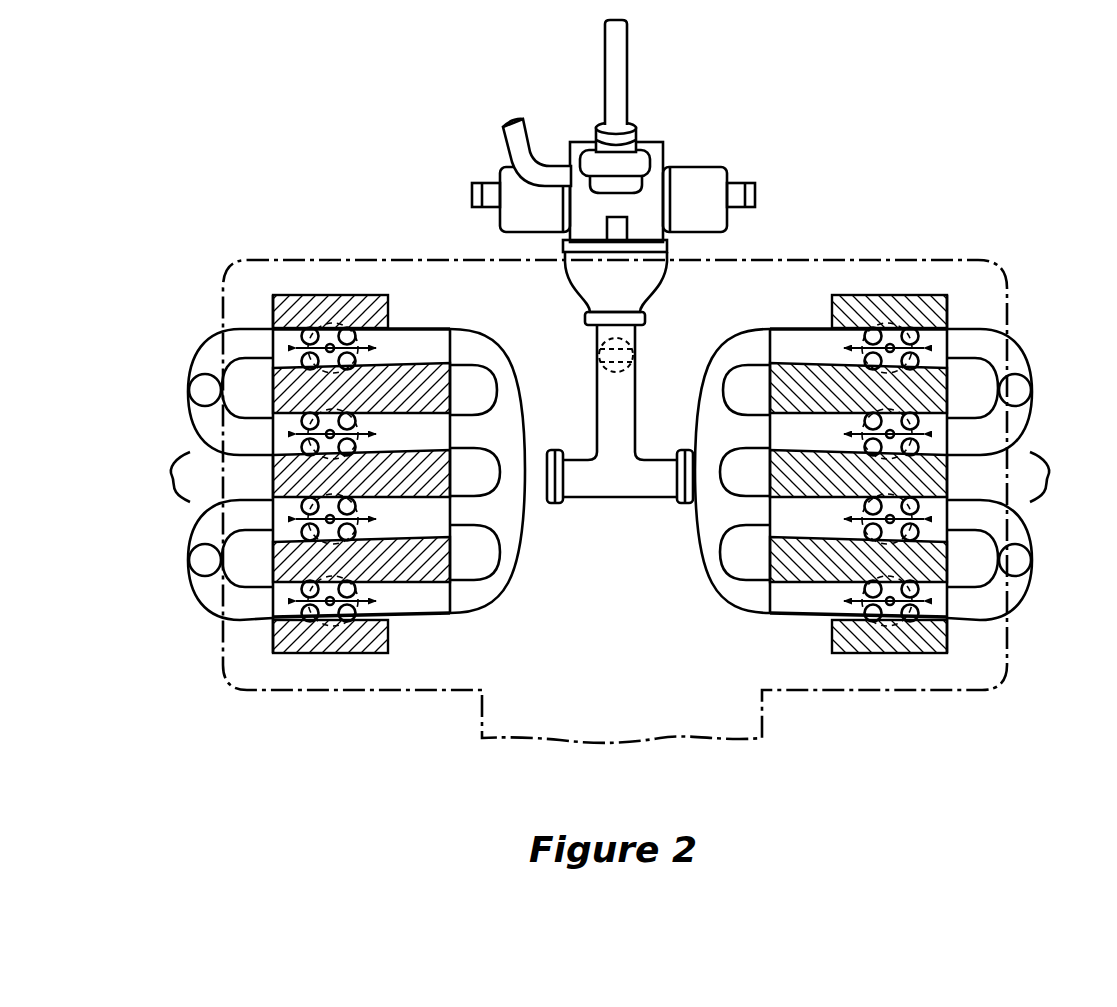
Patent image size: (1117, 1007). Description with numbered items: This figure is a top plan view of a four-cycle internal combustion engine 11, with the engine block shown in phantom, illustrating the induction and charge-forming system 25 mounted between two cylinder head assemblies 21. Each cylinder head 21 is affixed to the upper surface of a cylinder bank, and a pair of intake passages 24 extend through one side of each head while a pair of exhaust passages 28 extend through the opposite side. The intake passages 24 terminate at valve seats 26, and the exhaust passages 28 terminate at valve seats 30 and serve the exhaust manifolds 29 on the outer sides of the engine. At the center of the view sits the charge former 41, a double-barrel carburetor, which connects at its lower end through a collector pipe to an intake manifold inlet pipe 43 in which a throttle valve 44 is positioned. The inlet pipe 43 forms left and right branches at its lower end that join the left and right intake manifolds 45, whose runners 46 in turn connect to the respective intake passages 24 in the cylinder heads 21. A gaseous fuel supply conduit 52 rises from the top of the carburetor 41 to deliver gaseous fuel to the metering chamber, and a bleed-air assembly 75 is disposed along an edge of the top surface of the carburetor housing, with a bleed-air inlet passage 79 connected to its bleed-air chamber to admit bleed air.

The internal combustion engine 11 is at (948, 258).
The cylinder head assembly 21 is at (338, 295).
The intake passage 24 is at (413, 327).
The induction and charge-forming system 25 is at (582, 132).
The valve seat 26 is at (362, 328).
The exhaust passage 28 is at (300, 328).
The exhaust manifold 29 is at (205, 591).
The valve seat 30 is at (310, 328).
The charge former 41 is at (678, 135).
The intake manifold inlet pipe 43 is at (640, 392).
The throttle valve 44 is at (647, 347).
The intake manifold 45 is at (523, 592).
The runner 46 is at (470, 347).
The gaseous fuel supply conduit 52 is at (628, 44).
The bleed-air assembly 75 is at (600, 124).
The bleed-air inlet passage 79 is at (503, 142).